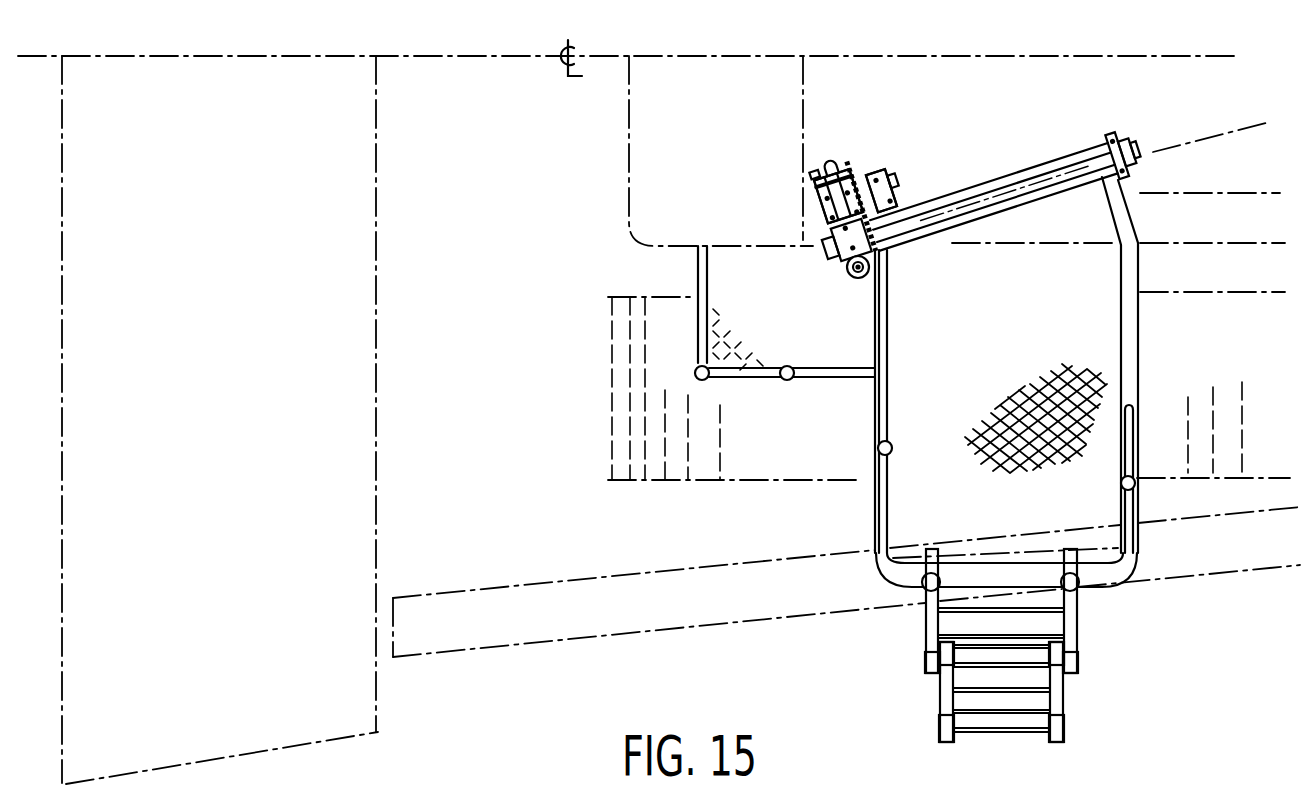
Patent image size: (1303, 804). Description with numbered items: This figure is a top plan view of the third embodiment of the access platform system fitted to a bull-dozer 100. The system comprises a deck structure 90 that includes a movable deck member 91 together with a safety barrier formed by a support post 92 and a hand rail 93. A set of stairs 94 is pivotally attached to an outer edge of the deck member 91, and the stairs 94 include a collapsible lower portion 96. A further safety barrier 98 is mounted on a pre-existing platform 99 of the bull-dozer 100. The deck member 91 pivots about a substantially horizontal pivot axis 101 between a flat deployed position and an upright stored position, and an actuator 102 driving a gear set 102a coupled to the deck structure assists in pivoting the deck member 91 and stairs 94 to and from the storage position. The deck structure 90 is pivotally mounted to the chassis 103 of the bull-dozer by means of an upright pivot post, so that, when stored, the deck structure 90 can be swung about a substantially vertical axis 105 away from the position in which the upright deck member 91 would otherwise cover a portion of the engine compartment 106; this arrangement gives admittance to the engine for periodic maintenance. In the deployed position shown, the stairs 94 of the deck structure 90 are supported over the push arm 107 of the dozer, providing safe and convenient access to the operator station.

The deck structure 90 is at (1178, 374).
The movable deck member 91 is at (1010, 377).
The support post 92 is at (922, 583).
The hand rail 93 is at (878, 522).
The set of stairs 94 is at (922, 627).
The collapsible lower portion 96 is at (1057, 698).
The further safety barrier 98 is at (698, 284).
The pre-existing platform 99 is at (787, 325).
The bull-dozer 100 is at (567, 134).
The horizontal pivot axis 101 is at (1220, 233).
The actuator 102 is at (812, 205).
The gear set 102a is at (893, 212).
The chassis 103 is at (1212, 140).
The vertical axis 105 is at (856, 278).
The engine compartment 106 is at (962, 105).
The push arm 107 is at (522, 633).